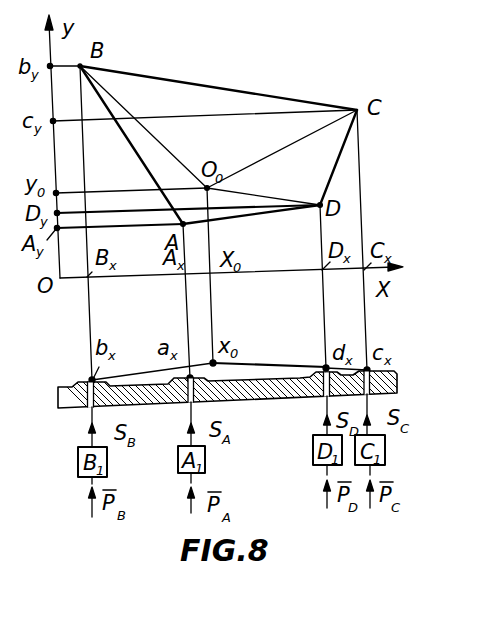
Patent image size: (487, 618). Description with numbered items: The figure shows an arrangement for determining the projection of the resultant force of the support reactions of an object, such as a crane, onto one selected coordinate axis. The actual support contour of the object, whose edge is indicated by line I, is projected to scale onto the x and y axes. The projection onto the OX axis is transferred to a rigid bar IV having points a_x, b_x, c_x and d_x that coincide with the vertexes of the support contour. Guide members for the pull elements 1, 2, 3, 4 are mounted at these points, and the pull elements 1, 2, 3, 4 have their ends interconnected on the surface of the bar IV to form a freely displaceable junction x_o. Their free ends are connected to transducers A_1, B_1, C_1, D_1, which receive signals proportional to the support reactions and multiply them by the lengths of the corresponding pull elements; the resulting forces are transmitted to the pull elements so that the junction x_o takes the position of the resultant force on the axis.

The pull element 1 is at (188, 414).
The pull element 2 is at (88, 419).
The pull element 3 is at (375, 398).
The pull element 4 is at (325, 407).
The edge line of object contour I is at (214, 92).
The rigid bar IV is at (390, 375).